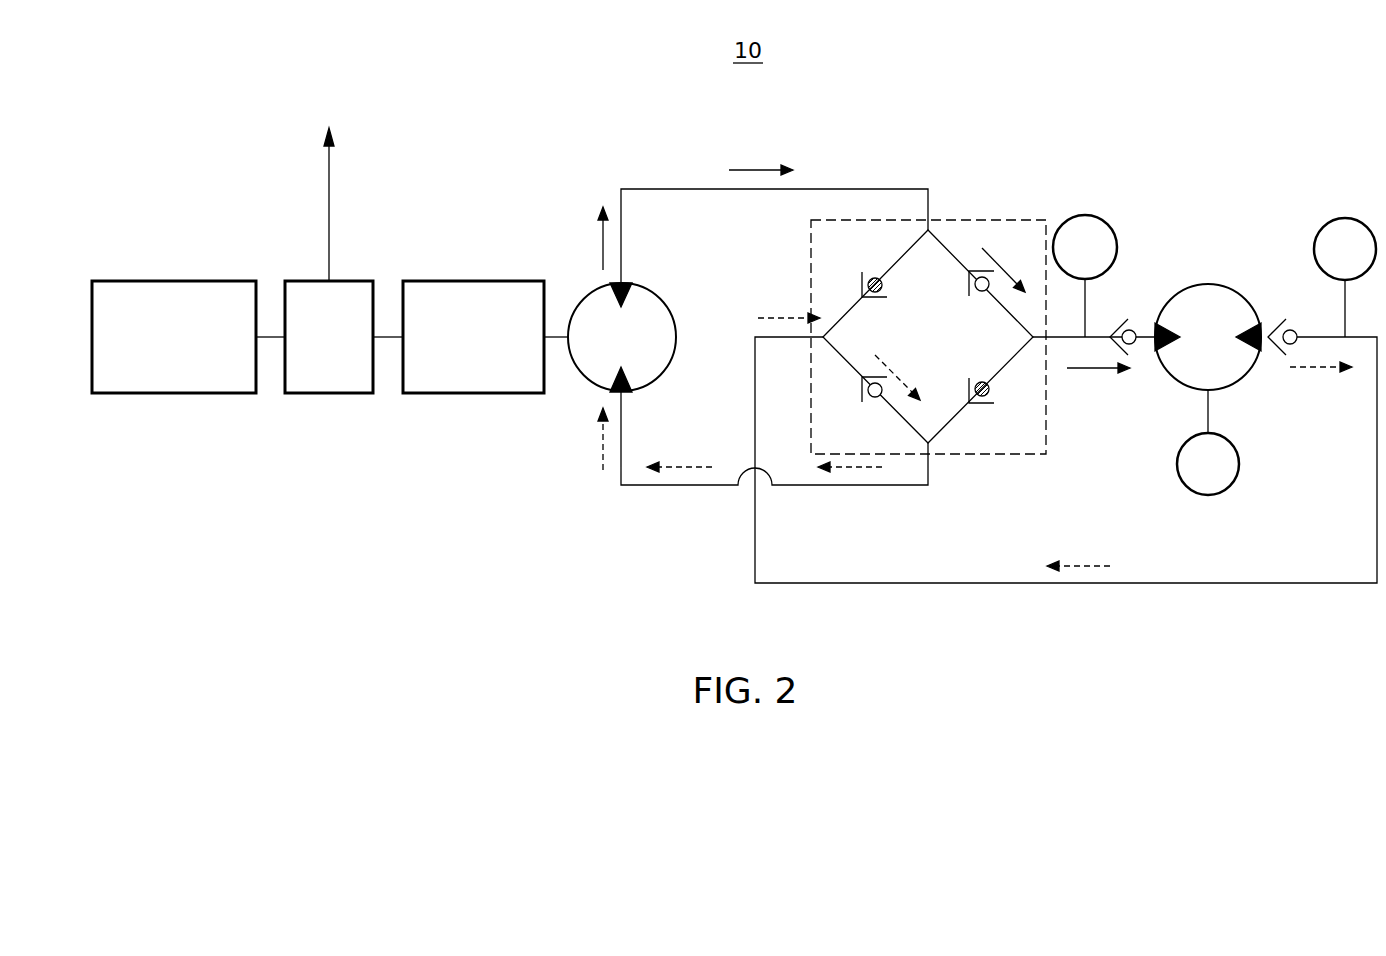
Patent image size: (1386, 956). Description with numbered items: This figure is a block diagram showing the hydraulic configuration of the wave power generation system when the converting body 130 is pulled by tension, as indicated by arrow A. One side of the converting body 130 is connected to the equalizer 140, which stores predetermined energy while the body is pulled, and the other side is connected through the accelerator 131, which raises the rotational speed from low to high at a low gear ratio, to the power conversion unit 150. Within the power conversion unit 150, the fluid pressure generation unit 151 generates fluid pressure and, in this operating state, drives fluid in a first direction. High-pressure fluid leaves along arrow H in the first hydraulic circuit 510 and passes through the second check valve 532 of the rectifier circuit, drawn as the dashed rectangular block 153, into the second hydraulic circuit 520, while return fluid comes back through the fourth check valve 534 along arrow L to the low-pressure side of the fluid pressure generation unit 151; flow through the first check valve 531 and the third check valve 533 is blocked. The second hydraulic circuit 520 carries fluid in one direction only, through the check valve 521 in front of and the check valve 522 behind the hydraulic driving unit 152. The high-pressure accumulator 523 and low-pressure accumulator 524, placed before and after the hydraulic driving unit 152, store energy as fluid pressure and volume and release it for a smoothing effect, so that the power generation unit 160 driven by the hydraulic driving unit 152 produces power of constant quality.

The equalizer 140 is at (174, 279).
The converting body 130 is at (353, 280).
The accelerator 131 is at (474, 279).
The power conversion unit 150 is at (650, 154).
The fluid pressure generation unit 151 is at (658, 293).
The first hydraulic circuit 510 is at (853, 189).
The second hydraulic circuit 520 is at (1377, 450).
The check valve block 153 is at (983, 217).
The first check valve 531 is at (873, 277).
The second check valve 532 is at (980, 293).
The third check valve 533 is at (992, 395).
The fourth check valve 534 is at (878, 398).
The high-pressure accumulator 523 is at (1083, 217).
The check valve 521 is at (1128, 323).
The hydraulic driving unit 152 is at (1209, 281).
The check valve 522 is at (1290, 328).
The low-pressure accumulator 524 is at (1345, 218).
The power generation unit 160 is at (1207, 497).